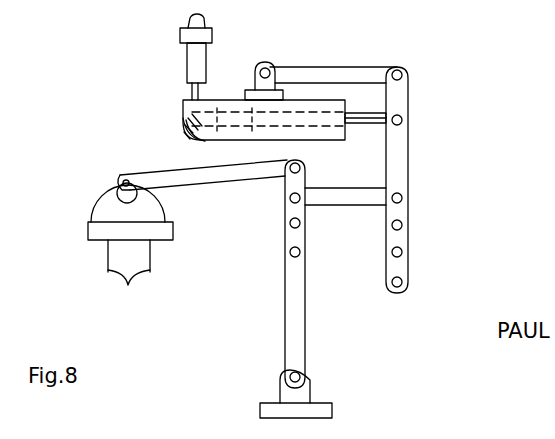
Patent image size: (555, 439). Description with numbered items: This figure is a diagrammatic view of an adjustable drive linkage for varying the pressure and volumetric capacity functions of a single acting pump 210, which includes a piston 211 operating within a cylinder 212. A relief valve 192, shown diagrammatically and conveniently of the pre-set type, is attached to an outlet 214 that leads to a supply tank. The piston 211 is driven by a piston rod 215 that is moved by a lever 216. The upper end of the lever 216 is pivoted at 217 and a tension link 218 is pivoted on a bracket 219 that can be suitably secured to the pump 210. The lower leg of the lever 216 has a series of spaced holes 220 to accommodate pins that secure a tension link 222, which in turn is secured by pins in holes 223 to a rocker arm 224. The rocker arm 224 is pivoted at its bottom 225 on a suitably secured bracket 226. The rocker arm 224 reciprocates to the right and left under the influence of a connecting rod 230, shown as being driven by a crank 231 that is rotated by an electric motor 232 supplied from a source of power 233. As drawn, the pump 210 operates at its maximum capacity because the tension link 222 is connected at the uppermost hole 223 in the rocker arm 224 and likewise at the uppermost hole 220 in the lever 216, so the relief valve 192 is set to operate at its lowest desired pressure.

The single acting pump 210 is at (235, 56).
The outlet 214 is at (186, 21).
The relief valve 192 is at (187, 55).
The piston 211 is at (182, 117).
The cylinder 212 is at (195, 140).
The bracket 219 is at (267, 67).
The tension link 218 is at (319, 72).
The pivot 217 is at (401, 69).
The lever 216 is at (399, 142).
The spaced holes 220 is at (401, 223).
The piston rod 215 is at (365, 123).
The tension link 222 is at (357, 198).
The holes 223 is at (290, 223).
The rocker arm 224 is at (290, 318).
The bottom pivot 225 is at (301, 372).
The bracket 226 is at (306, 390).
The connecting rod 230 is at (189, 184).
The crank 231 is at (120, 197).
The electric motor 232 is at (112, 166).
The source of power 233 is at (130, 268).